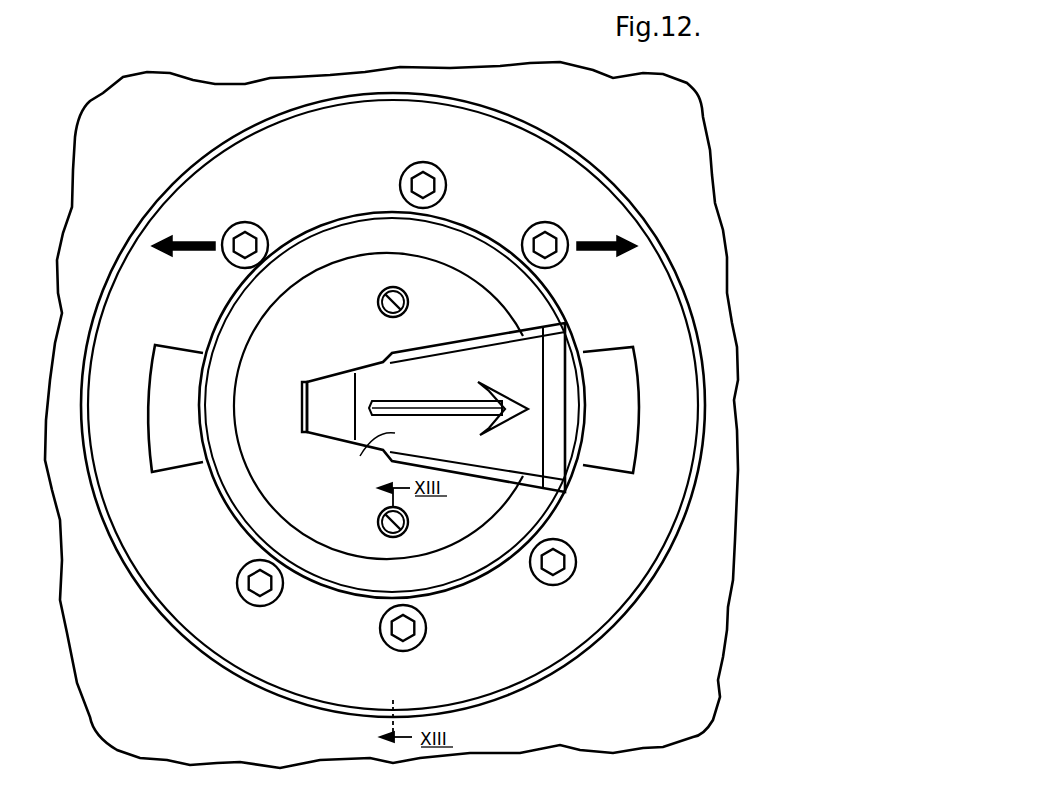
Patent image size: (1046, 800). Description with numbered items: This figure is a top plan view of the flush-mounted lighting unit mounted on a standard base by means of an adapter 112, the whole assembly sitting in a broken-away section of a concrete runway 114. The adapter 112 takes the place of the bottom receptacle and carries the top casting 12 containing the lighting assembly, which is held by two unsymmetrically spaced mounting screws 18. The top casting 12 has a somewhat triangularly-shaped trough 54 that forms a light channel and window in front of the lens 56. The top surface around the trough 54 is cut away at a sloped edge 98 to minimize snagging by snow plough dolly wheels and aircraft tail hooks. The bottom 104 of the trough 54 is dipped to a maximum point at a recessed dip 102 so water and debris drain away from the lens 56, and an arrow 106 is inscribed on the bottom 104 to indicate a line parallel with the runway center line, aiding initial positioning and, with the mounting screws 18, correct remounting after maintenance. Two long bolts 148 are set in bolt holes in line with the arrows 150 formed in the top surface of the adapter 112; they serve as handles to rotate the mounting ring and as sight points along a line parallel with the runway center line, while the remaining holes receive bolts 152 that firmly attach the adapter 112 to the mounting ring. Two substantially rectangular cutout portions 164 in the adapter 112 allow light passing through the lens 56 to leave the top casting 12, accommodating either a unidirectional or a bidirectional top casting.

The top casting 12 is at (264, 368).
The mounting screws 18 is at (380, 303).
The trough 54 is at (436, 409).
The lens 56 is at (302, 416).
The sloped edge 98 is at (464, 343).
The recessed dip 102 is at (356, 396).
The bottom of the trough 104 is at (362, 452).
The arrow 106 is at (472, 403).
The adapter 112 is at (242, 167).
The concrete runway 114 is at (95, 660).
The long bolts 148 is at (247, 244).
The arrows 150 is at (191, 243).
The bolts 152 is at (425, 186).
The rectangular cutout portions 164 is at (165, 455).